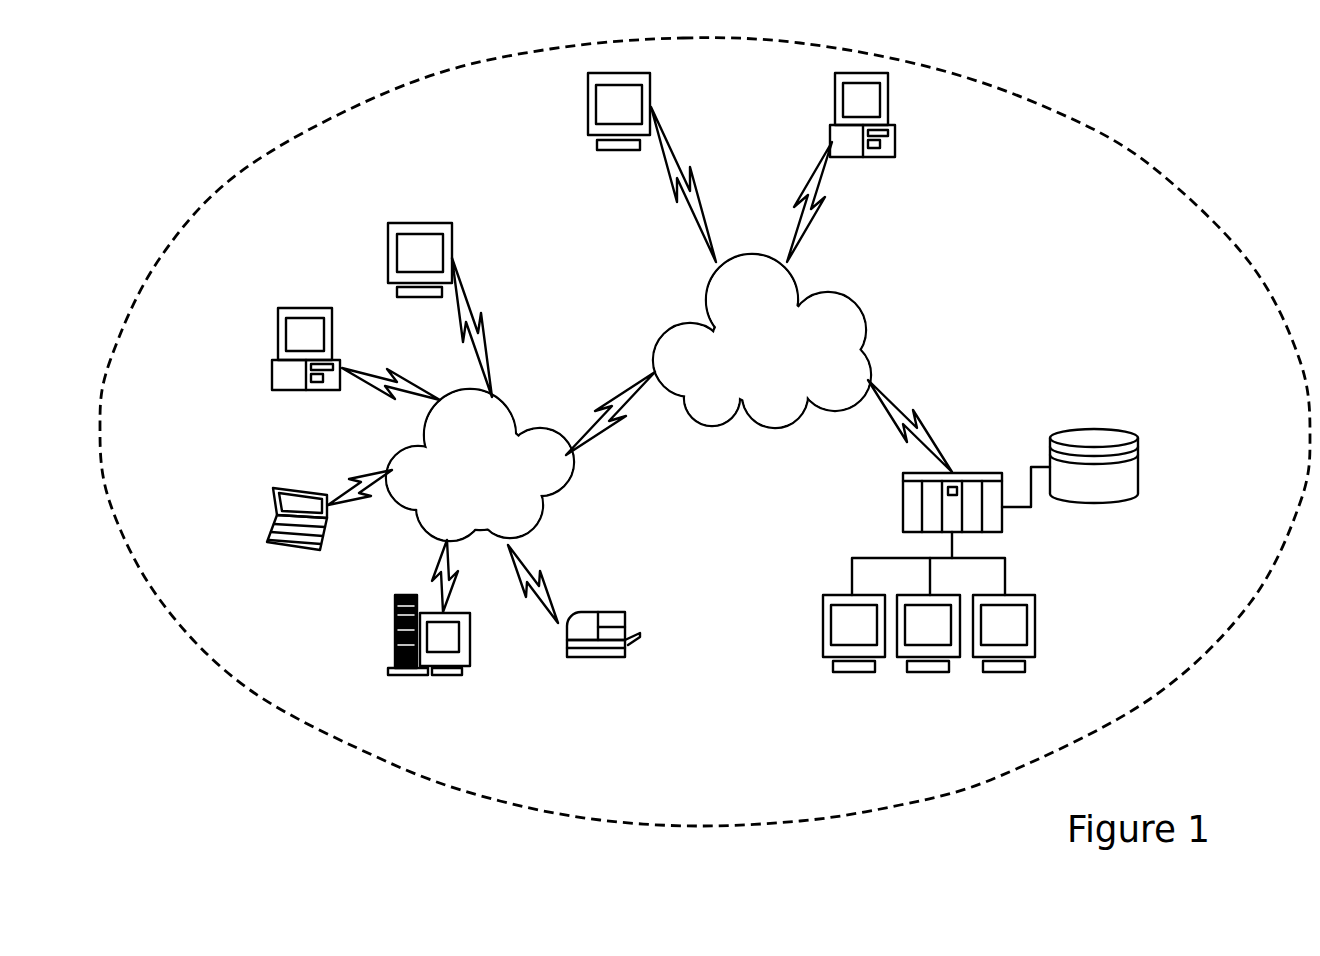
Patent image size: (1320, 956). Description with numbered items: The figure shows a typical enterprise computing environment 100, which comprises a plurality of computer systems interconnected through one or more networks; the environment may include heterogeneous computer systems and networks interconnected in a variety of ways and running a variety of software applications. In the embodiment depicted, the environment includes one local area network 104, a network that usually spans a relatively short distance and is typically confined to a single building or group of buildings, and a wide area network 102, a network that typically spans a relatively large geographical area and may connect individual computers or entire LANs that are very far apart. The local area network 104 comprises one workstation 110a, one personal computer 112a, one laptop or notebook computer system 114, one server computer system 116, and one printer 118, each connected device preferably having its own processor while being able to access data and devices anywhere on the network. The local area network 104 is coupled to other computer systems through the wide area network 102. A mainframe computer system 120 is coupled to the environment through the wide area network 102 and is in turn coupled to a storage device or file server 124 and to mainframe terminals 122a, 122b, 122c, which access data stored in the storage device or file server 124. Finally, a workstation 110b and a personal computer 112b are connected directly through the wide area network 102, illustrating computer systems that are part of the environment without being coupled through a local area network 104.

The enterprise computing environment 100 is at (253, 690).
The wide area network 102 is at (700, 421).
The local area network 104 is at (572, 505).
The workstation 110a is at (417, 300).
The workstation 110b is at (620, 152).
The personal computer 112a is at (300, 393).
The personal computer 112b is at (865, 159).
The laptop or notebook computer system 114 is at (313, 553).
The server computer system 116 is at (427, 677).
The printer 118 is at (605, 660).
The mainframe computer system 120 is at (902, 503).
The mainframe terminal 122a is at (855, 675).
The mainframe terminal 122b is at (933, 675).
The mainframe terminal 122c is at (1008, 675).
The storage device or file server 124 is at (1098, 505).